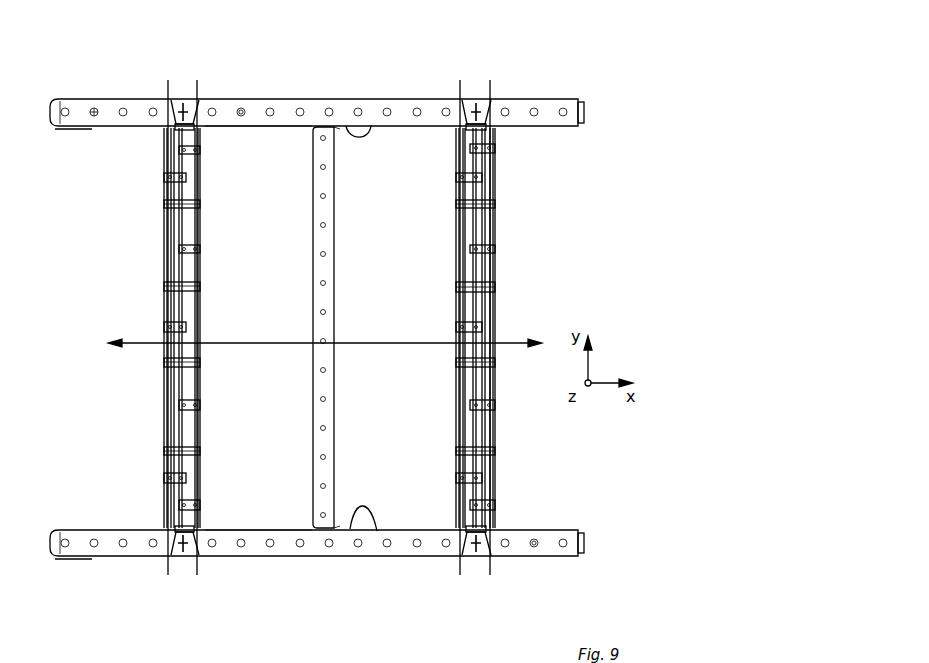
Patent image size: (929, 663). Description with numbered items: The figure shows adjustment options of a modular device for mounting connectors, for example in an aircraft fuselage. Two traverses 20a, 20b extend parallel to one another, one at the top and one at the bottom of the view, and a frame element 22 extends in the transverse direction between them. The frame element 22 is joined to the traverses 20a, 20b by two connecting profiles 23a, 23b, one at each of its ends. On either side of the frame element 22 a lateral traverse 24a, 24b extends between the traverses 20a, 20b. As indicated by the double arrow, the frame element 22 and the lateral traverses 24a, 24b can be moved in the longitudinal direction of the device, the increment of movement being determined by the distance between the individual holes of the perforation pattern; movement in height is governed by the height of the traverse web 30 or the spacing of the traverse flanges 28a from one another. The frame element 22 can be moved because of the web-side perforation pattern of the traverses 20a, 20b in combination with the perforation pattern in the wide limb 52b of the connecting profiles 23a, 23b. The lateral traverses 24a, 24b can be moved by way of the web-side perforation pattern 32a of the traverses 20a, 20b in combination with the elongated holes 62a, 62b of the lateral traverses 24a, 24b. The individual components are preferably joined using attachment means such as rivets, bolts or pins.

The traverse 20a is at (556, 98).
The traverse 20b is at (225, 555).
The frame element 22 is at (334, 278).
The connecting profile 23a is at (335, 128).
The connecting profile 23b is at (335, 527).
The lateral traverse 24a is at (163, 239).
The lateral traverse 24b is at (495, 225).
The traverse flange 28a is at (86, 109).
The traverse web 30 is at (231, 128).
The web-side perforation pattern 32a is at (241, 108).
The wide limb 52b is at (371, 125).
The elongated hole 62a is at (183, 543).
The elongated hole 62b is at (183, 108).